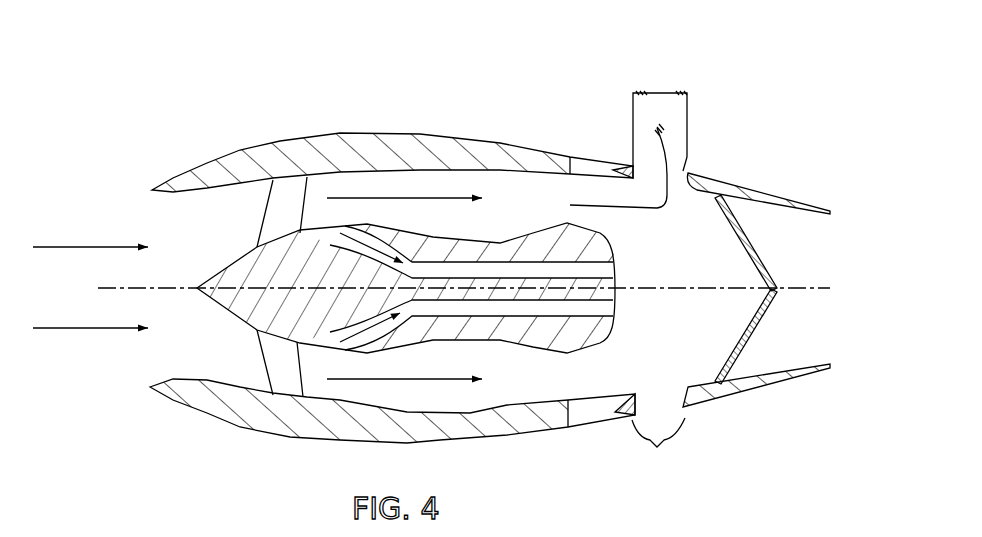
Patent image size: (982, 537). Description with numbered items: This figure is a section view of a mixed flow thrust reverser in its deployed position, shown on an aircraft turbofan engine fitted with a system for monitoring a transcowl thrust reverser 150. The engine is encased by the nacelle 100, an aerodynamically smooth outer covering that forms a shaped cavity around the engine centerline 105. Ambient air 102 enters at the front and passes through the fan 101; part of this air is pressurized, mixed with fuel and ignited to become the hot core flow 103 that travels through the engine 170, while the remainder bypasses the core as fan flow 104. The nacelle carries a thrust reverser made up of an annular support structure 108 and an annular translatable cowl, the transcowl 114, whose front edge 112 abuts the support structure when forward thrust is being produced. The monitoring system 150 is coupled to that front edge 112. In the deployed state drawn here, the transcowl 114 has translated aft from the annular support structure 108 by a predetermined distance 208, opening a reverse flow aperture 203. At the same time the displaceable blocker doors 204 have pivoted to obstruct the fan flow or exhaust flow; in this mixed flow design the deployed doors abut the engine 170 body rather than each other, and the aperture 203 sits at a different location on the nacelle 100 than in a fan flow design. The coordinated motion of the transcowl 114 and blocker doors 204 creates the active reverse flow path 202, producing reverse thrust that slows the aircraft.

The nacelle 100 is at (467, 87).
The fan 101 is at (290, 178).
The ambient air 102 is at (100, 247).
The core flow 103 is at (407, 241).
The fan flow 104 is at (417, 197).
The engine centerline 105 is at (785, 288).
The annular support structure 108 is at (607, 157).
The front edge 112 is at (681, 170).
The transcowl 114 is at (767, 190).
The system for monitoring a transcowl thrust reverser 150 is at (633, 177).
The engine body 170 is at (313, 279).
The active reverse flow path 202 is at (657, 213).
The reverse flow aperture 203 is at (658, 449).
The displaceable blocker doors 204 is at (752, 248).
The predetermined distance 208 is at (662, 93).